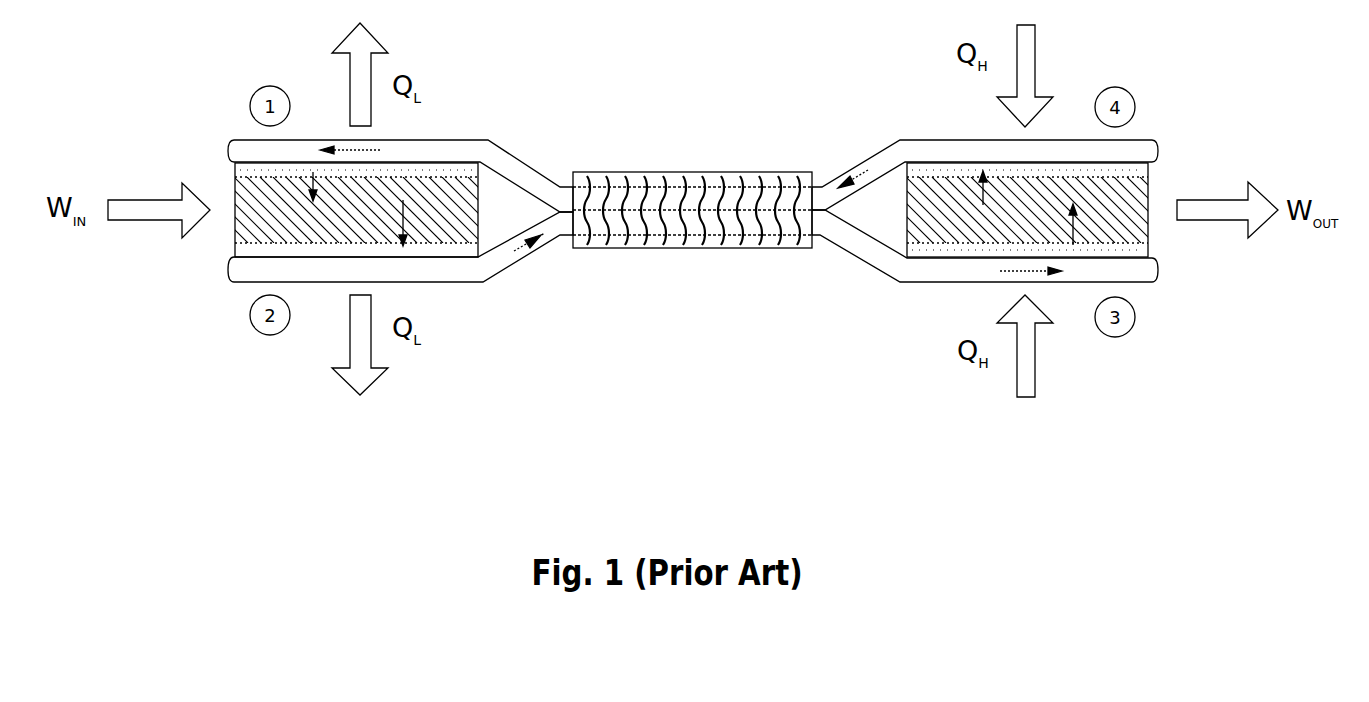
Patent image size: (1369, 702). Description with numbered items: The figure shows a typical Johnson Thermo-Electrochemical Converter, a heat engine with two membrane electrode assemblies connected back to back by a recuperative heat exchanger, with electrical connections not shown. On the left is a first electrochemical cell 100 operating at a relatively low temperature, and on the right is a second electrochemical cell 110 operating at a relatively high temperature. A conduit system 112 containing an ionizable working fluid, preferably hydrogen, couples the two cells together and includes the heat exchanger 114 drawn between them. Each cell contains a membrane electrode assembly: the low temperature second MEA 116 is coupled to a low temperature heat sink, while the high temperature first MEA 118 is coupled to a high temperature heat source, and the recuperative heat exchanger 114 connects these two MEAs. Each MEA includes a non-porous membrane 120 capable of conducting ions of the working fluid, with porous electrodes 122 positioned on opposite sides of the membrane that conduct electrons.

The first electrochemical cell 100 is at (233, 240).
The second electrochemical cell 110 is at (1153, 187).
The conduit system 112 is at (877, 152).
The heat exchanger 114 is at (690, 172).
The second MEA 116 is at (233, 193).
The first MEA 118 is at (1150, 228).
The non-porous membrane 120 is at (233, 212).
The porous electrodes 122 is at (233, 168).